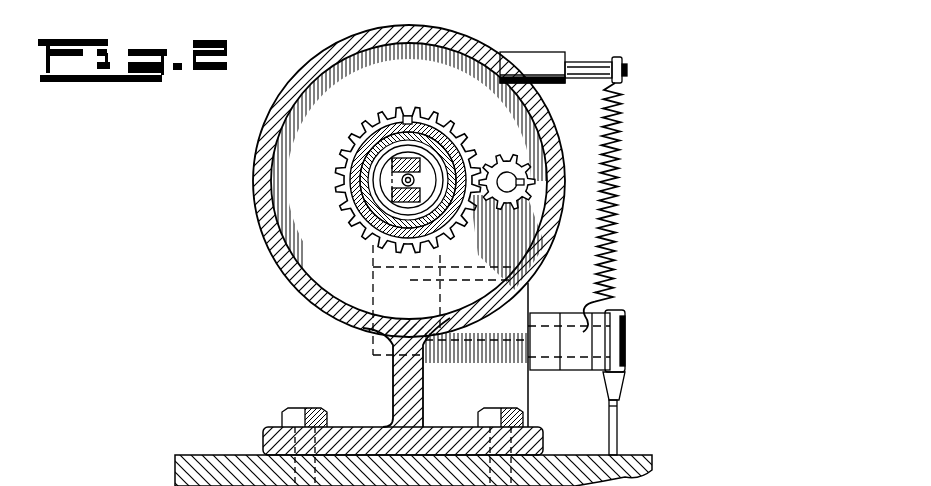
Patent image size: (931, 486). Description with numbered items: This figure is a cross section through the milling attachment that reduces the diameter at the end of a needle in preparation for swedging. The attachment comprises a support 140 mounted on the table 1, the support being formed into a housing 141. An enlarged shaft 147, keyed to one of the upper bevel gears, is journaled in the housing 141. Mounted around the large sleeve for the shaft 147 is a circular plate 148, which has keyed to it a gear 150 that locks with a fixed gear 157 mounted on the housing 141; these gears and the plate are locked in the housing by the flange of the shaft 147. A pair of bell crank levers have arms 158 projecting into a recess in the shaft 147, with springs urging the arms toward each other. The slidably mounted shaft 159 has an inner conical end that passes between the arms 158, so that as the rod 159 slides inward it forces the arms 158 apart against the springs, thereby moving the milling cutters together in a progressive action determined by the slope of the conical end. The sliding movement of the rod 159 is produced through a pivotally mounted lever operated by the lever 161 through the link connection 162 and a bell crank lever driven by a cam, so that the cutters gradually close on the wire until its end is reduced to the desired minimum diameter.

The table 1 is at (221, 458).
The support 140 is at (392, 378).
The housing 141 is at (253, 156).
The enlarged shaft 147 is at (400, 150).
The circular plate 148 is at (449, 151).
The gear 150 is at (439, 125).
The fixed gear 157 is at (521, 145).
The arms 158 is at (396, 168).
The slidably mounted shaft 159 is at (413, 181).
The lever 161 is at (580, 363).
The link connection 162 is at (619, 415).